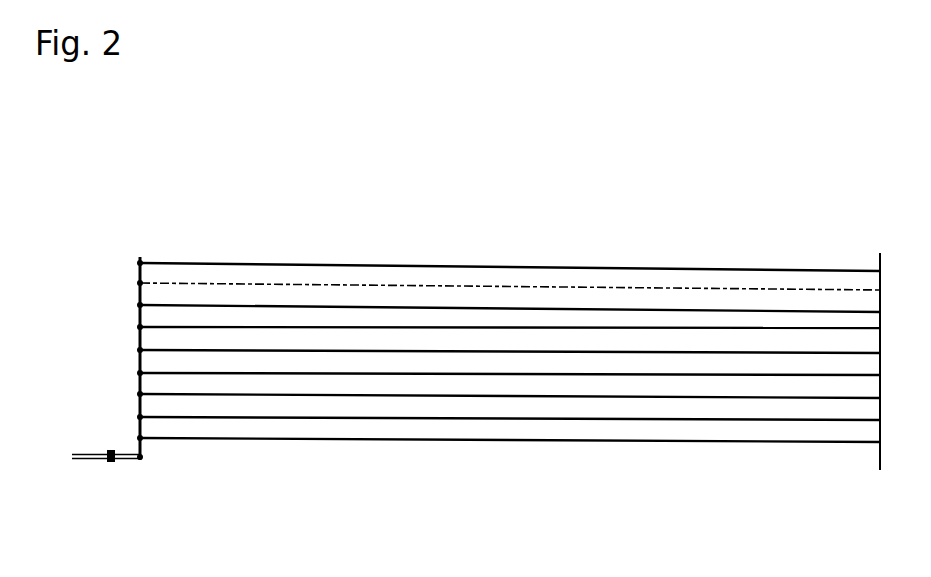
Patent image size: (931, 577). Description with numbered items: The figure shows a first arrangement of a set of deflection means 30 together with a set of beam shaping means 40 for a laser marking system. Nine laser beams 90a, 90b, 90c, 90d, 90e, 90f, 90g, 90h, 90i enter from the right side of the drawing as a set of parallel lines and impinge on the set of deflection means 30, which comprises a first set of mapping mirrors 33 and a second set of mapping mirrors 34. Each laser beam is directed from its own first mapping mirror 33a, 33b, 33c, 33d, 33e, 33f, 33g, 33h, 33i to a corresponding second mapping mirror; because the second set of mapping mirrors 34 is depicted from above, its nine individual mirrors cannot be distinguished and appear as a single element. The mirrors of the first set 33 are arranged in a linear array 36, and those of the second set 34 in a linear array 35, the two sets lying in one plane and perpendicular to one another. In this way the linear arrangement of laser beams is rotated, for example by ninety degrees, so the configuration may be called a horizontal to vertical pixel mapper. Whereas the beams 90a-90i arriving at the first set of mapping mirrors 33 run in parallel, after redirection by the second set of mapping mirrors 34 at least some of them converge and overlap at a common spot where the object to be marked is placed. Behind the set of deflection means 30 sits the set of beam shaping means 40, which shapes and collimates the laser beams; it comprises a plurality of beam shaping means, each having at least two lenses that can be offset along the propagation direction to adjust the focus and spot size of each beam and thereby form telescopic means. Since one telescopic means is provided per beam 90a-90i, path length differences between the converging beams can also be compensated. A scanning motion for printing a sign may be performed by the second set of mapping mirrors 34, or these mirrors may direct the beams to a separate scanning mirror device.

The set of deflection means 30 is at (442, 361).
The first set of mapping mirrors 33 is at (151, 309).
The linear array 36 is at (143, 245).
The second set of mapping mirrors 34 is at (186, 482).
The linear array 35 is at (141, 461).
The set of beam shaping means 40 is at (105, 462).
The first mapping mirror 33a is at (140, 438).
The first mapping mirror 33b is at (140, 417).
The first mapping mirror 33c is at (140, 394).
The first mapping mirror 33d is at (140, 373).
The first mapping mirror 33e is at (140, 350).
The first mapping mirror 33f is at (140, 327).
The first mapping mirror 33g is at (140, 305).
The first mapping mirror 33h is at (140, 283).
The first mapping mirror 33i is at (140, 263).
The laser beam 90a is at (220, 265).
The laser beam 90b is at (317, 287).
The laser beam 90c is at (390, 308).
The laser beam 90d is at (475, 328).
The laser beam 90e is at (567, 353).
The laser beam 90f is at (658, 375).
The laser beam 90g is at (553, 398).
The laser beam 90h is at (668, 419).
The laser beam 90i is at (777, 443).